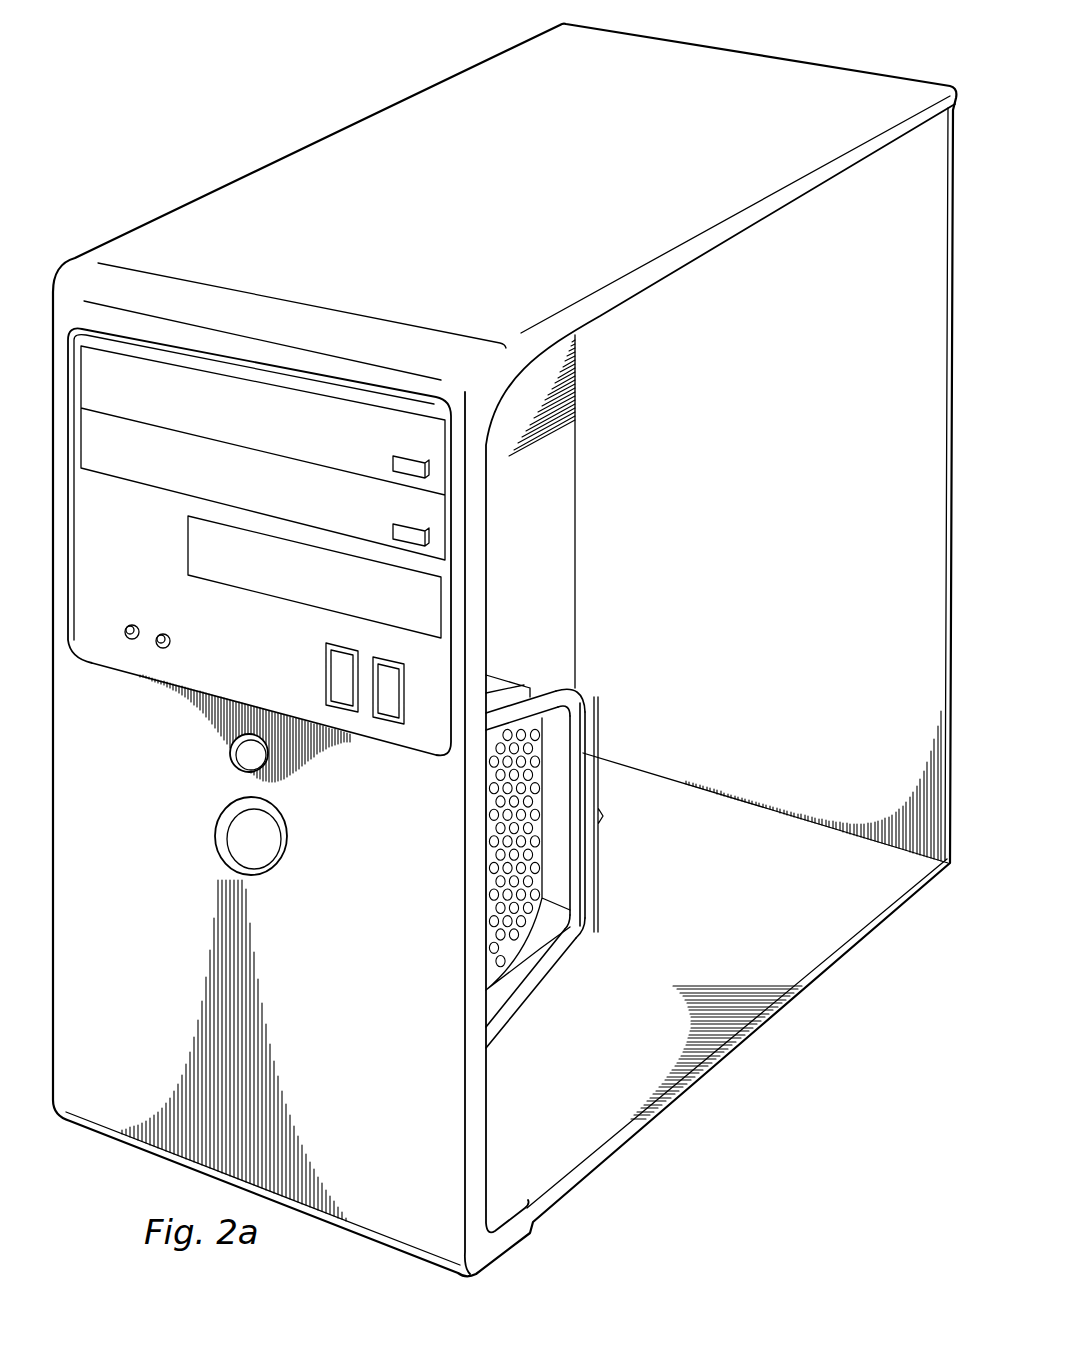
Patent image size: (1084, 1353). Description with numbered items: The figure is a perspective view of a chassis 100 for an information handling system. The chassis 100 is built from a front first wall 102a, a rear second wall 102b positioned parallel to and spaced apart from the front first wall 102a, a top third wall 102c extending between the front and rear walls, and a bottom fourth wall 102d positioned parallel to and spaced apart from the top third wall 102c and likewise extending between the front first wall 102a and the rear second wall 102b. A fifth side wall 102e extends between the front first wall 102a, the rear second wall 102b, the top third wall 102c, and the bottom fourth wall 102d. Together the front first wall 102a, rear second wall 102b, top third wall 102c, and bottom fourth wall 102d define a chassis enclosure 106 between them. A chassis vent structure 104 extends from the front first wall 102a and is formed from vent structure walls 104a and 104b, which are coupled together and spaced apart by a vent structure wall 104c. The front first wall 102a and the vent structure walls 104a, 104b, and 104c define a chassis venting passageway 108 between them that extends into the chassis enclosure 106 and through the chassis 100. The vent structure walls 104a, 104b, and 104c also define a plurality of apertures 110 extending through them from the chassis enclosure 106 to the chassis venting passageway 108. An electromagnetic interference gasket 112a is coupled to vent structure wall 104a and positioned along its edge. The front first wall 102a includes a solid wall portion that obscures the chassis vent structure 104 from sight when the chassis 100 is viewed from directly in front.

The chassis 100 is at (226, 104).
The front first wall 102a is at (165, 921).
The rear second wall 102b is at (830, 376).
The top third wall 102c is at (568, 180).
The bottom fourth wall 102d is at (814, 908).
The fifth side wall 102e is at (558, 510).
The chassis vent structure 104 is at (580, 848).
The vent structure wall 104a is at (547, 691).
The vent structure wall 104b is at (523, 1003).
The vent structure wall 104c is at (567, 739).
The chassis enclosure 106 is at (784, 687).
The chassis venting passageway 108 is at (547, 941).
The apertures 110 is at (491, 829).
The electromagnetic interference gasket 112a is at (502, 675).